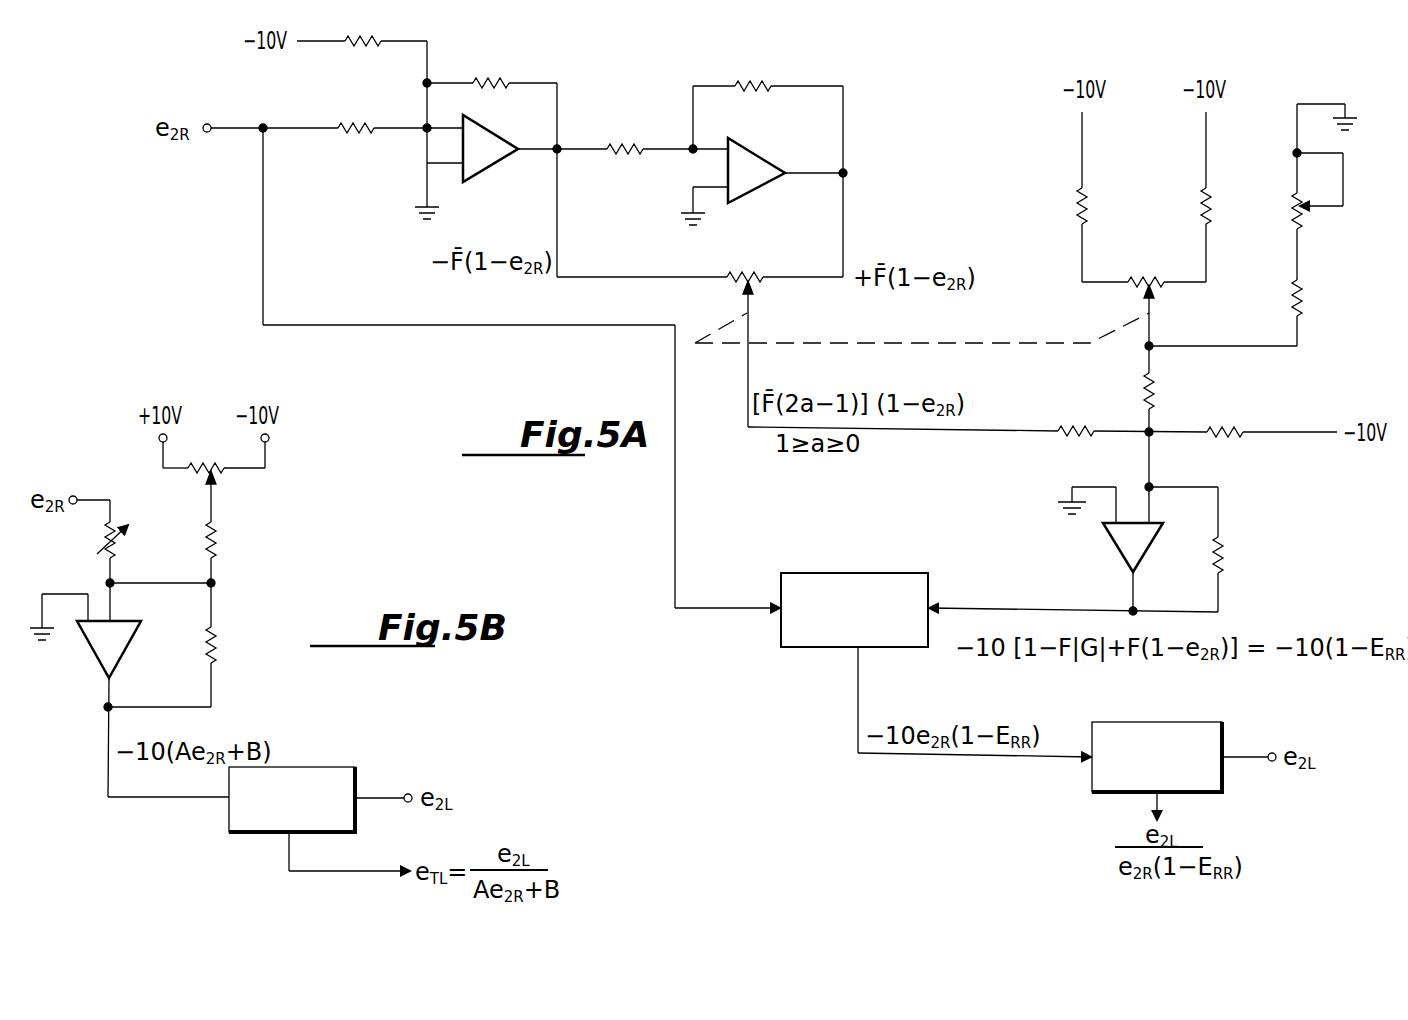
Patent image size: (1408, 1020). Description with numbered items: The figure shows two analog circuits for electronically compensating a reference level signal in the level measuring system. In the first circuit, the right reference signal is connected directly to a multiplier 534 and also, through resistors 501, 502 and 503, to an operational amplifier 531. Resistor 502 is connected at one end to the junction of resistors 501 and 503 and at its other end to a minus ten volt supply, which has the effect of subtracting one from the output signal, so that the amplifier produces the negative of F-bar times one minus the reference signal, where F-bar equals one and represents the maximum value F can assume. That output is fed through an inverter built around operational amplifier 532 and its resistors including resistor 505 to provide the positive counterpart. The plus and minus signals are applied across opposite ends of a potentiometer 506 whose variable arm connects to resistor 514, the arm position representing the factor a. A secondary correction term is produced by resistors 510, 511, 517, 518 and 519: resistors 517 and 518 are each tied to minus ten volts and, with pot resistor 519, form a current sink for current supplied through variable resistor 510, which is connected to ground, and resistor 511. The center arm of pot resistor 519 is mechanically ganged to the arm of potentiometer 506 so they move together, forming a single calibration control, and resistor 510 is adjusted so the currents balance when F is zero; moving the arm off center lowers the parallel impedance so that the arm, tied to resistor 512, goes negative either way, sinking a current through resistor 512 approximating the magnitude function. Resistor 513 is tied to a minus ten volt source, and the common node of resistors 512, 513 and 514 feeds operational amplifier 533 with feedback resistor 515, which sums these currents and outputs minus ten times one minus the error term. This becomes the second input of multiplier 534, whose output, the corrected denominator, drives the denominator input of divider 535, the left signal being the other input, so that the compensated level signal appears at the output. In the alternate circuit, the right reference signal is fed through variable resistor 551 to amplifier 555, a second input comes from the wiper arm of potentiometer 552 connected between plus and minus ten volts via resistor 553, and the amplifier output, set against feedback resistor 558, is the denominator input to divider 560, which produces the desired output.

In FIG. 5A, the resistor 501 is at (354, 136).
In FIG. 5A, the resistor 502 is at (380, 40).
In FIG. 5A, the resistor 503 is at (500, 78).
In FIG. 5A, the resistor 505 is at (766, 82).
In FIG. 5A, the potentiometer 506 is at (752, 274).
In FIG. 5A, the variable resistor 510 is at (1290, 205).
In FIG. 5A, the resistor 511 is at (1304, 305).
In FIG. 5A, the resistor 512 is at (1156, 402).
In FIG. 5A, the resistor 513 is at (1243, 428).
In FIG. 5A, the resistor 514 is at (1086, 426).
In FIG. 5A, the feedback resistor 515 is at (1230, 556).
In FIG. 5A, the resistor 517 is at (1078, 204).
In FIG. 5A, the resistor 518 is at (1203, 204).
In FIG. 5A, the pot resistor 519 is at (1143, 278).
In FIG. 5A, the operational amplifier 531 is at (495, 170).
In FIG. 5A, the operational amplifier 532 is at (758, 172).
In FIG. 5A, the operational amplifier 533 is at (1118, 548).
In FIG. 5A, the multiplier 534 is at (895, 586).
In FIG. 5A, the divider 535 is at (1196, 737).
In FIG. 5B, the variable resistor 551 is at (104, 545).
In FIG. 5B, the potentiometer 552 is at (218, 476).
In FIG. 5B, the resistor 553 is at (222, 546).
In FIG. 5B, the amplifier 555 is at (100, 652).
In FIG. 5B, the feedback resistor 558 is at (222, 648).
In FIG. 5B, the divider 560 is at (297, 775).